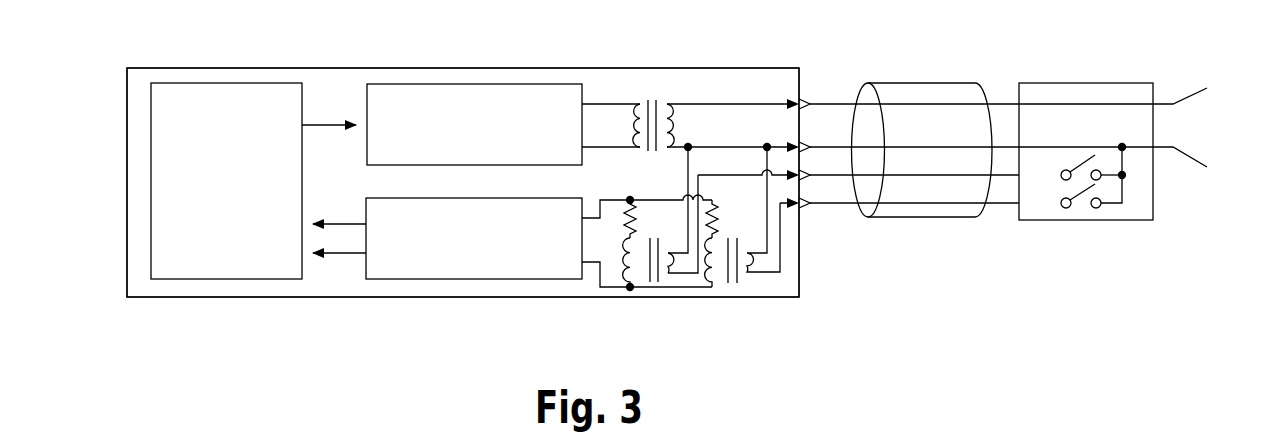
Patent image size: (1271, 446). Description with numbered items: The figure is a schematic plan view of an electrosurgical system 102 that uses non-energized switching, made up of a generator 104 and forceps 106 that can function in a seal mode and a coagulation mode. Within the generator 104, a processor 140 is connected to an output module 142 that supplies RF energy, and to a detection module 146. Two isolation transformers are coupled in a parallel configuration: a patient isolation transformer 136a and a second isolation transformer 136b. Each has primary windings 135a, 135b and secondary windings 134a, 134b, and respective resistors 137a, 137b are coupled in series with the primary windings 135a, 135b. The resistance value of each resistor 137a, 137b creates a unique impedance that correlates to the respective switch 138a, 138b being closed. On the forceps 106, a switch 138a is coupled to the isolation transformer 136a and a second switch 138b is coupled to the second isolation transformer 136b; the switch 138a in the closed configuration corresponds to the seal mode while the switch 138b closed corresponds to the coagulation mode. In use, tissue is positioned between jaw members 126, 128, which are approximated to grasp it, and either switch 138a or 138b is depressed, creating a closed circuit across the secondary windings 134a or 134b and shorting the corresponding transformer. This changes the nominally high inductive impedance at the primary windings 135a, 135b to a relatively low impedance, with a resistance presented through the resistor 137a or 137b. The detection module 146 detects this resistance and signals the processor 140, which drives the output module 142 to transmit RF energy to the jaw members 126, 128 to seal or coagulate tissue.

The electrosurgical system 102 is at (118, 52).
The generator 104 is at (350, 68).
The forceps 106 is at (1088, 164).
The jaw member 126 is at (1190, 88).
The jaw member 128 is at (1190, 166).
The secondary windings 134a is at (687, 277).
The secondary windings 134b is at (757, 263).
The primary windings 135a is at (630, 260).
The primary windings 135b is at (717, 282).
The patient isolation transformer 136a is at (613, 279).
The second isolation transformer 136b is at (796, 284).
The resistor 137a is at (630, 200).
The resistor 137b is at (712, 200).
The switch 138a is at (1027, 174).
The second switch 138b is at (1067, 209).
The processor 140 is at (228, 83).
The output module 142 is at (485, 84).
The detection module 146 is at (405, 280).